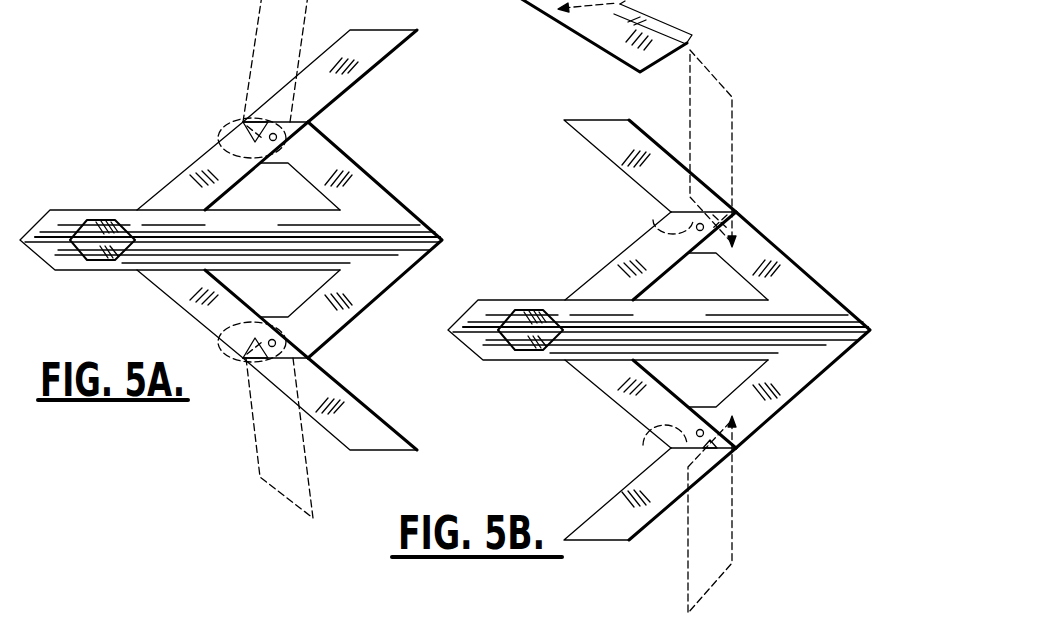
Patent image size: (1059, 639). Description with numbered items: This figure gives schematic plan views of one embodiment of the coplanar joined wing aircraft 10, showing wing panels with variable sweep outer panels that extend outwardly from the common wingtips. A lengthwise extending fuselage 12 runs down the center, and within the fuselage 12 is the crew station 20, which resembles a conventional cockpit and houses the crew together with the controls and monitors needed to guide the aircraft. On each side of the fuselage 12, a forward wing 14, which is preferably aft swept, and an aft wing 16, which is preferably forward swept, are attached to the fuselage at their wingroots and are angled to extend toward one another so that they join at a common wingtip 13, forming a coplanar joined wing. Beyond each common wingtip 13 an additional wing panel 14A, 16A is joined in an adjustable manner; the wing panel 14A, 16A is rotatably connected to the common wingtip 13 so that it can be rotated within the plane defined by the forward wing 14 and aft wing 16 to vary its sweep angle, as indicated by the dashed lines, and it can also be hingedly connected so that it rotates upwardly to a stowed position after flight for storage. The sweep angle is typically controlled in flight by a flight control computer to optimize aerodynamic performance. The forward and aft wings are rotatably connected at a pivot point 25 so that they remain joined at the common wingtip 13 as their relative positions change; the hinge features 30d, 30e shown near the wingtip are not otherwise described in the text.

In FIG. 5A, the joined wing aircraft 10 is at (383, 146).
In FIG. 5B, the joined wing aircraft 10 is at (798, 196).
In FIG. 5A, the fuselage 12 is at (83, 214).
In FIG. 5B, the fuselage 12 is at (658, 309).
In FIG. 5A, the common wingtip 13 is at (218, 140).
In FIG. 5B, the common wingtip 13 is at (653, 224).
In FIG. 5A, the forward wing 14 is at (168, 197).
In FIG. 5B, the forward wing 14 is at (643, 330).
In FIG. 5A, the wing panel 14A is at (264, 36).
In FIG. 5B, the wing panel 14A is at (618, 50).
In FIG. 5A, the aft wing 16 is at (373, 200).
In FIG. 5B, the aft wing 16 is at (779, 330).
In FIG. 5B, the wing panel 16A is at (624, 156).
In FIG. 5A, the crew station 20 is at (99, 250).
In FIG. 5B, the crew station 20 is at (525, 353).
In FIG. 5B, the pivot point 25 is at (553, 12).
In FIG. 5B, the hinge segment 30d is at (671, 7).
In FIG. 5B, the hinge strip 30e is at (673, 38).